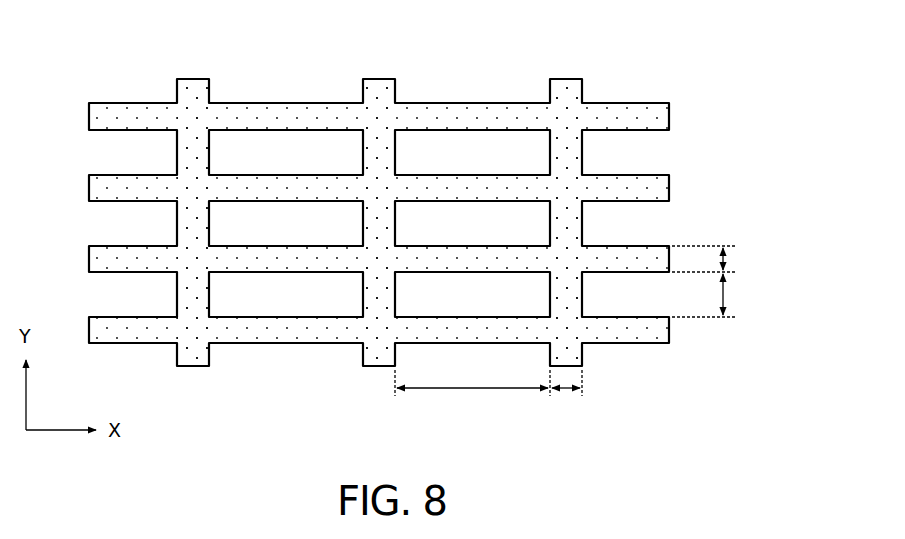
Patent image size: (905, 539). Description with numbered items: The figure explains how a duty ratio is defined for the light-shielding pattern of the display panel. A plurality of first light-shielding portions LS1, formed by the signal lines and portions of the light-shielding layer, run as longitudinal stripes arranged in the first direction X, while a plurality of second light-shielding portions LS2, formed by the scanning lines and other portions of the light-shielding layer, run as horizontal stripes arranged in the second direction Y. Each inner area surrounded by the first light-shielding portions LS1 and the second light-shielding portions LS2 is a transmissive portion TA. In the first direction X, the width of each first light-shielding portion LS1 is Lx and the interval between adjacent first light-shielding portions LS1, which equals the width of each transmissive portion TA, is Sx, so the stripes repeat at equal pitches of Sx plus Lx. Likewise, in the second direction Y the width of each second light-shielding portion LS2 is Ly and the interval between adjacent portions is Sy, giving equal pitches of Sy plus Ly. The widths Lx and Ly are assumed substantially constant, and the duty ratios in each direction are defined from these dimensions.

The first light-shielding portion LS1 is at (198, 152).
The second light-shielding portion LS2 is at (301, 195).
The transmissive portion TA is at (420, 292).
The interval of adjacent first light-shielding portions Sx is at (470, 391).
The width of each first light-shielding portion Lx is at (566, 391).
The width of each second light-shielding portion Ly is at (728, 259).
The interval of adjacent second light-shielding portions Sy is at (728, 295).